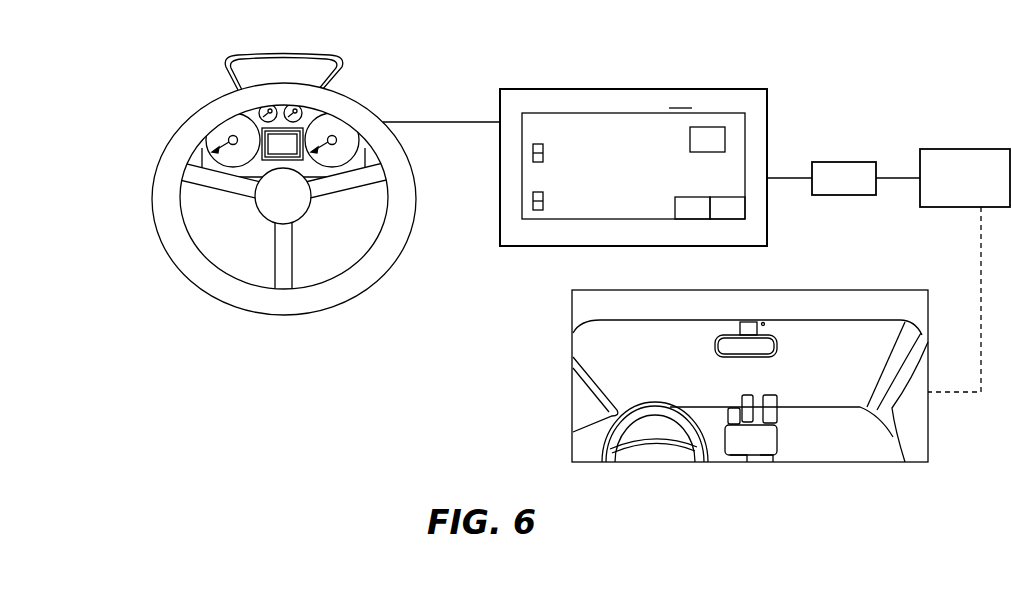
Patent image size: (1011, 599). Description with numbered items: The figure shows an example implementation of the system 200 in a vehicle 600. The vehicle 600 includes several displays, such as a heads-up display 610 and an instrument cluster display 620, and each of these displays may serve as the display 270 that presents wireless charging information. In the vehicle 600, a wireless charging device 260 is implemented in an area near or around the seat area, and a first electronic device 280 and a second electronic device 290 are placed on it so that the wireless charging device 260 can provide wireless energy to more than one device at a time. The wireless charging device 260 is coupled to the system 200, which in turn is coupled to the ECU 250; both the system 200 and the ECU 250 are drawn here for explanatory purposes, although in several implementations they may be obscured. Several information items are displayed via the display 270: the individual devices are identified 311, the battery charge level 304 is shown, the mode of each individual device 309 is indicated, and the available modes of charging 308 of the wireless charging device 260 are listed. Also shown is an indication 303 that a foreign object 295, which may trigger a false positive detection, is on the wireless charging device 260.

The vehicle 600 is at (180, 102).
The heads-up display 610 is at (236, 75).
The instrument cluster display 620 is at (367, 148).
The display 270 is at (300, 163).
The identification associated with the wireless charging device 311 is at (528, 177).
The identification of each of the electronic devices 309 is at (575, 198).
The charge level 304 is at (543, 211).
The presence of a foreign object 303 is at (725, 135).
The available modes of charging 308 is at (745, 203).
The system 200 is at (872, 192).
The ECU 250 is at (970, 148).
The foreign object 295 is at (730, 408).
The electronic device 2 290 is at (750, 396).
The electronic device 1 280 is at (776, 399).
The wireless charging device 260 is at (752, 448).